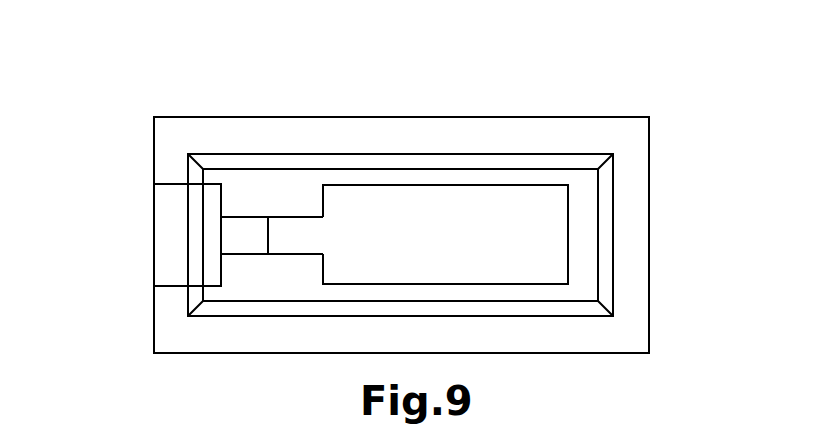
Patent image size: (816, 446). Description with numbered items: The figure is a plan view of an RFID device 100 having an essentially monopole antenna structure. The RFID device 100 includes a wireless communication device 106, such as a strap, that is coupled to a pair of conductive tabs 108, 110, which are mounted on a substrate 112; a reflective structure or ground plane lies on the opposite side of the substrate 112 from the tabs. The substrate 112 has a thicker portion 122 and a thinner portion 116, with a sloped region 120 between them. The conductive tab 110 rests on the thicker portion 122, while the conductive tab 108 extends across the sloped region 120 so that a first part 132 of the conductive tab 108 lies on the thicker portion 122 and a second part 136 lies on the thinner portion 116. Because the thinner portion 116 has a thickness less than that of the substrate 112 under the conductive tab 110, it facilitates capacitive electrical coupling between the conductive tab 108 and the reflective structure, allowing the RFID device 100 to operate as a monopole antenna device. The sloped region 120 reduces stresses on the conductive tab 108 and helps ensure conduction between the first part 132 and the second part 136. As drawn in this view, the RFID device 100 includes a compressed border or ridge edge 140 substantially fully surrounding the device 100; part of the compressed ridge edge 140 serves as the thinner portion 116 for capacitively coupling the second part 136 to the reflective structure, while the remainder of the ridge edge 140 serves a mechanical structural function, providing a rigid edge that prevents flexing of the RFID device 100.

The RFID device 100 is at (123, 61).
The substrate 112 is at (141, 111).
The thinner portion 116 is at (632, 180).
The sloped region 120 is at (608, 252).
The thicker portion 122 is at (470, 178).
The compressed ridge edge 140 is at (623, 320).
The second part of the conductive tab 136 is at (165, 242).
The first part of the conductive tab 132 is at (215, 185).
The wireless communication device 106 is at (252, 230).
The conductive tab 110 is at (512, 275).
The conductive tab 108 is at (161, 311).